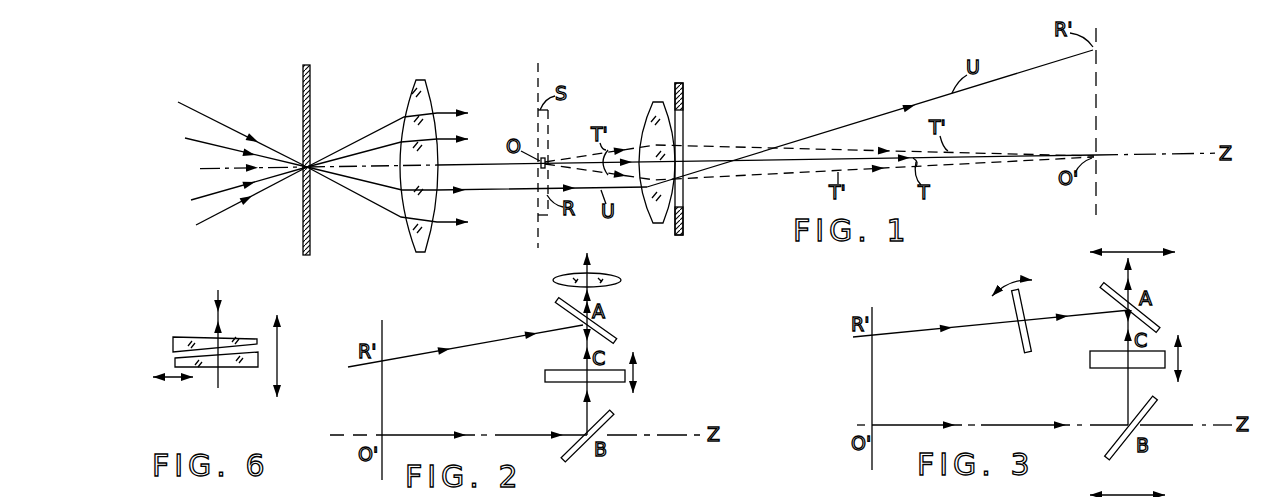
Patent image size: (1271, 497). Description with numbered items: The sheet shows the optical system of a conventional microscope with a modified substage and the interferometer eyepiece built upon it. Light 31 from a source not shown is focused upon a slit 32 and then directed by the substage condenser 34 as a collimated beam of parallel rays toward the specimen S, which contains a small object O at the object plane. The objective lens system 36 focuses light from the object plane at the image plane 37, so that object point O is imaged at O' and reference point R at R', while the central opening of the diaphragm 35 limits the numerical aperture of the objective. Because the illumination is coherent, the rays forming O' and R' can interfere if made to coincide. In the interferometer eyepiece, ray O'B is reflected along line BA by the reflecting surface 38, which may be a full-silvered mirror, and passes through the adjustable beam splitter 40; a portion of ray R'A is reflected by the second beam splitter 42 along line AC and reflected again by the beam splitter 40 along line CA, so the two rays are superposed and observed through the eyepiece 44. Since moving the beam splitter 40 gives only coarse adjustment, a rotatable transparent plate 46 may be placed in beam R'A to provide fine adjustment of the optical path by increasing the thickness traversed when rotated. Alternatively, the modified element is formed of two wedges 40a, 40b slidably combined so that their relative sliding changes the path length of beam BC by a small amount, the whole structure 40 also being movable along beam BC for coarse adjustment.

In FIG. 1, the light 31 is at (215, 145).
In FIG. 1, the slit 32 is at (310, 166).
In FIG. 1, the substage condenser 34 is at (410, 235).
In FIG. 1, the diaphragm 35 is at (683, 118).
In FIG. 1, the objective lens system 36 is at (647, 122).
In FIG. 1, the image plane 37 is at (1097, 88).
In FIG. 2, the image plane 37 is at (382, 402).
In FIG. 2, the reflecting surface 38 is at (606, 412).
In FIG. 3, the reflecting surface 38 is at (1152, 400).
In FIG. 2, the adjustable beam splitter 40 is at (557, 370).
In FIG. 3, the adjustable beam splitter 40 is at (1110, 351).
In FIG. 6, the adjustable beam splitter 40 is at (217, 366).
In FIG. 6, the wedge 40a is at (193, 337).
In FIG. 6, the wedge 40b is at (207, 367).
In FIG. 2, the second beam splitter 42 is at (614, 331).
In FIG. 3, the second beam splitter 42 is at (1160, 319).
In FIG. 2, the eyepiece 44 is at (616, 283).
In FIG. 3, the eyepiece 44 is at (1149, 254).
In FIG. 3, the rotatable transparent plate 46 is at (1007, 306).